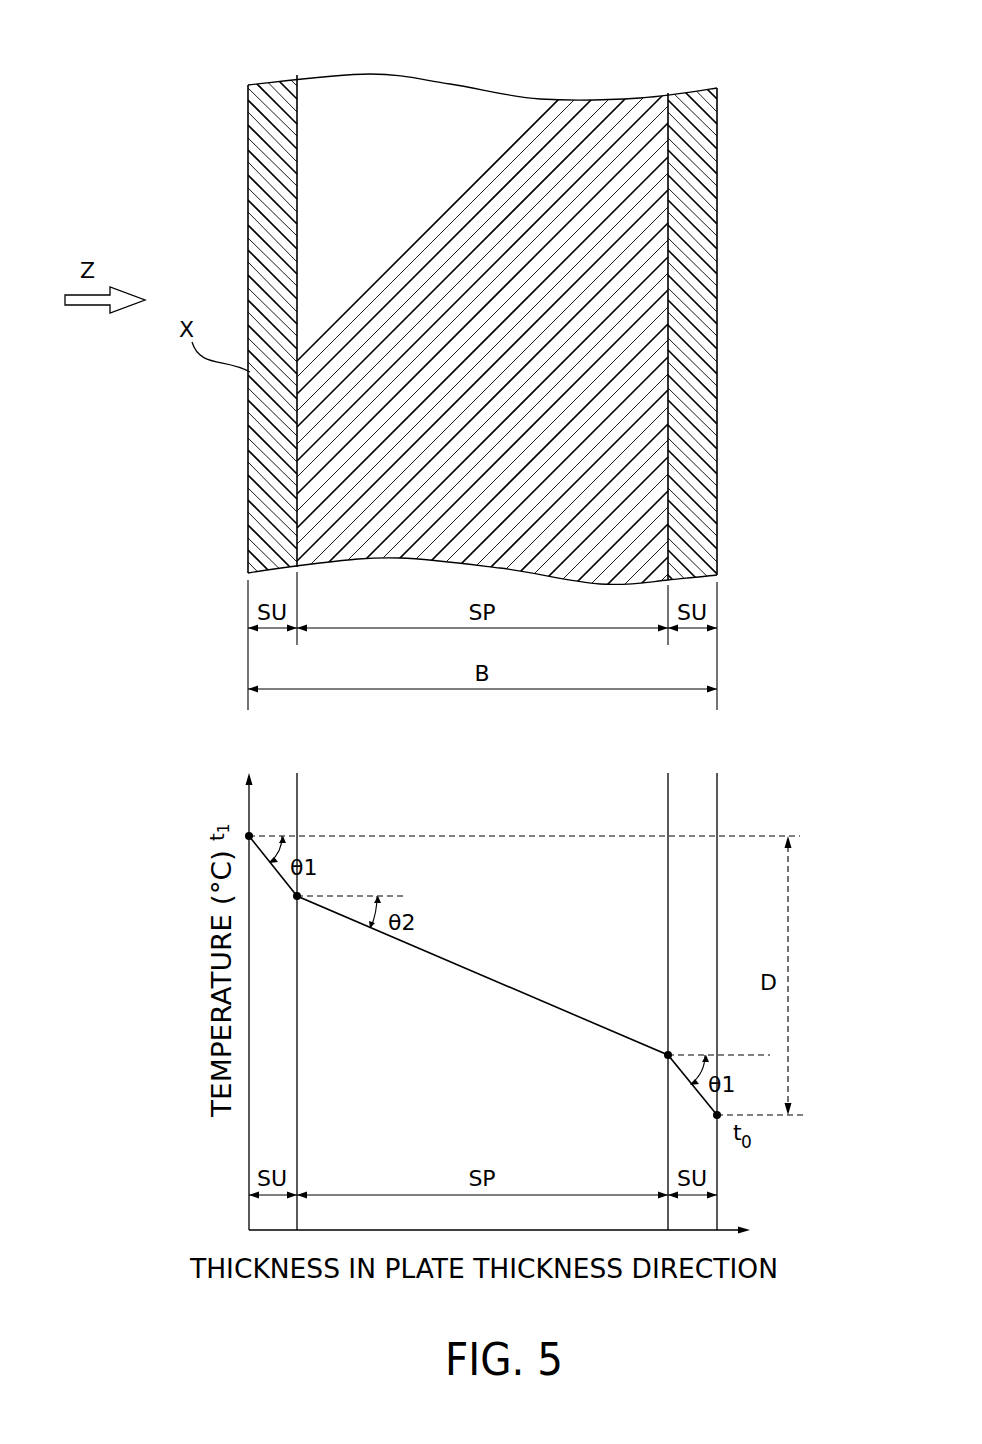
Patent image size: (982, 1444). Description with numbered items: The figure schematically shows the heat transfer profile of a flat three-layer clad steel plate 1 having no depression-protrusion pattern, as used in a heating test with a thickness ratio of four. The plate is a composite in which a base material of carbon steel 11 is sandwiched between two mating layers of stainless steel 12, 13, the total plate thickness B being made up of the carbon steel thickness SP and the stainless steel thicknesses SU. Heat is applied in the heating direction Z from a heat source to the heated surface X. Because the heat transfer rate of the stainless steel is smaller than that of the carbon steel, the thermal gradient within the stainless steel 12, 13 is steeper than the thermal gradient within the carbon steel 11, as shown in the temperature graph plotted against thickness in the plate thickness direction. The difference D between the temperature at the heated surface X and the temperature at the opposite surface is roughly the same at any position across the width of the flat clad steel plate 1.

The three-layer clad steel plate 1 is at (725, 75).
The carbon steel 11 is at (505, 128).
The stainless steel 12 is at (697, 200).
The stainless steel 13 is at (258, 217).